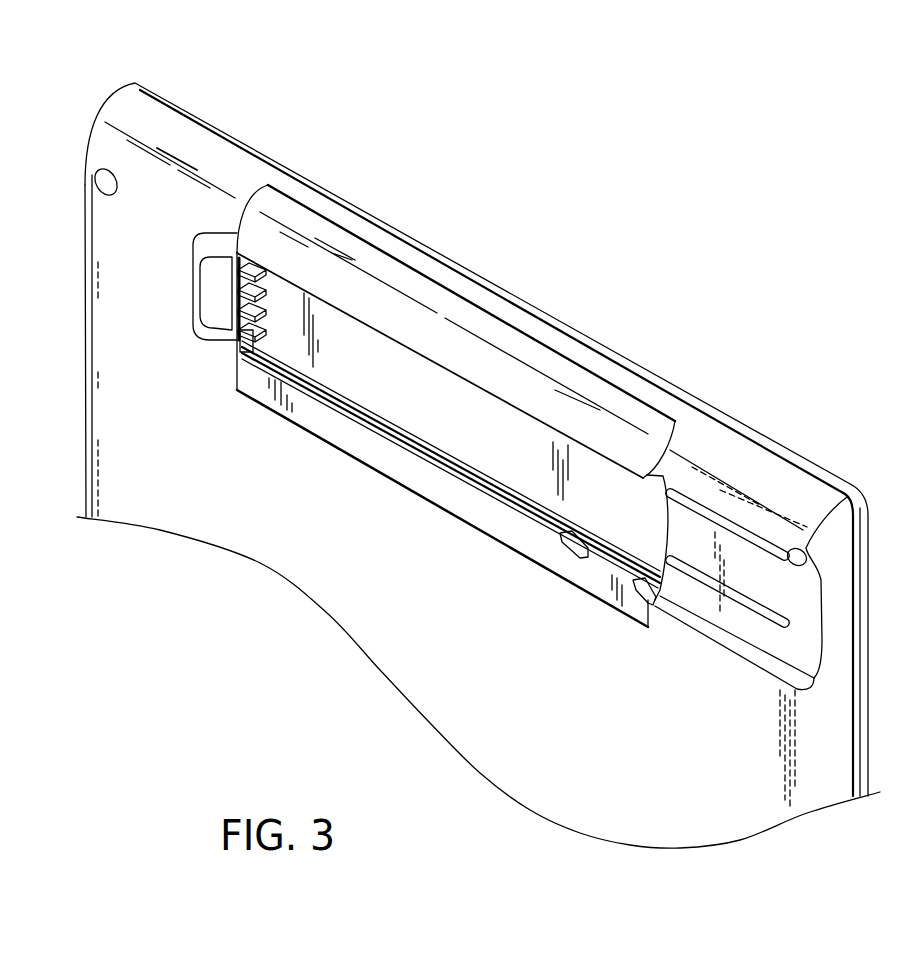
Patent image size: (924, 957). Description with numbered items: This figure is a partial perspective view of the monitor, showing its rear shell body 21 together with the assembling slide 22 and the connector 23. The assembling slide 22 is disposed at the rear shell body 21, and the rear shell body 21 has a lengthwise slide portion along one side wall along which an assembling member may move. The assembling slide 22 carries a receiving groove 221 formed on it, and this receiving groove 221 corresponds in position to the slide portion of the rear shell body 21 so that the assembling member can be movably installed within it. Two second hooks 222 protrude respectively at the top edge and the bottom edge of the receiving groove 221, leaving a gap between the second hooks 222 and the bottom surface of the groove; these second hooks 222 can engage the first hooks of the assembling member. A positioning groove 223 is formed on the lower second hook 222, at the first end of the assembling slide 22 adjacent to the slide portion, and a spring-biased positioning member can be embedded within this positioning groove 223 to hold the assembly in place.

The rear shell body 21 is at (124, 113).
The assembling slide 22 is at (393, 281).
The connector 23 is at (237, 305).
The receiving groove 221 is at (360, 375).
The second hooks 222 is at (391, 440).
The positioning groove 223 is at (572, 556).